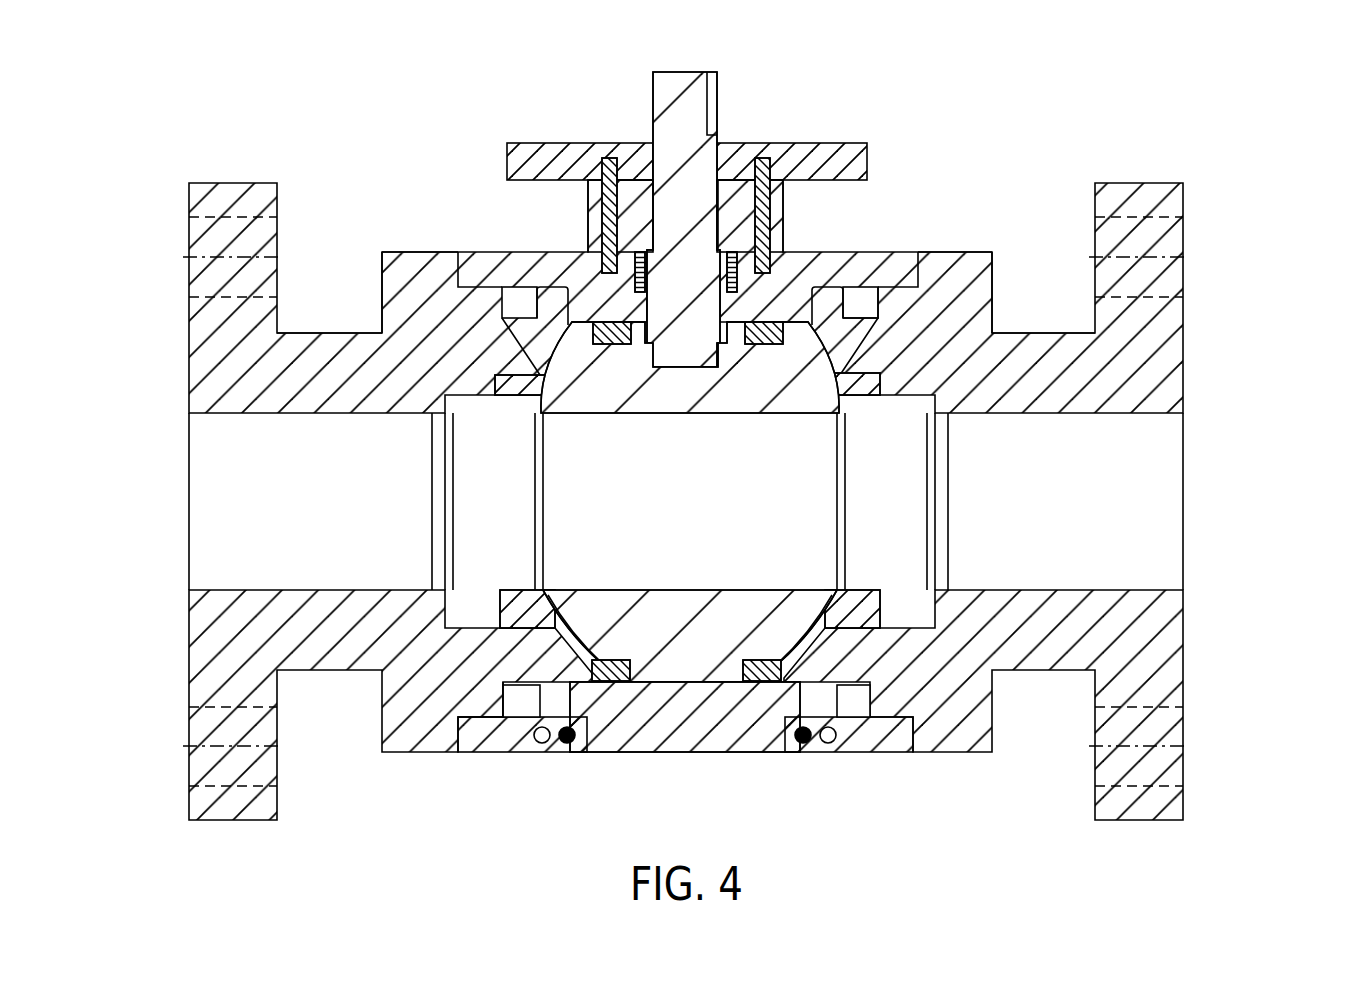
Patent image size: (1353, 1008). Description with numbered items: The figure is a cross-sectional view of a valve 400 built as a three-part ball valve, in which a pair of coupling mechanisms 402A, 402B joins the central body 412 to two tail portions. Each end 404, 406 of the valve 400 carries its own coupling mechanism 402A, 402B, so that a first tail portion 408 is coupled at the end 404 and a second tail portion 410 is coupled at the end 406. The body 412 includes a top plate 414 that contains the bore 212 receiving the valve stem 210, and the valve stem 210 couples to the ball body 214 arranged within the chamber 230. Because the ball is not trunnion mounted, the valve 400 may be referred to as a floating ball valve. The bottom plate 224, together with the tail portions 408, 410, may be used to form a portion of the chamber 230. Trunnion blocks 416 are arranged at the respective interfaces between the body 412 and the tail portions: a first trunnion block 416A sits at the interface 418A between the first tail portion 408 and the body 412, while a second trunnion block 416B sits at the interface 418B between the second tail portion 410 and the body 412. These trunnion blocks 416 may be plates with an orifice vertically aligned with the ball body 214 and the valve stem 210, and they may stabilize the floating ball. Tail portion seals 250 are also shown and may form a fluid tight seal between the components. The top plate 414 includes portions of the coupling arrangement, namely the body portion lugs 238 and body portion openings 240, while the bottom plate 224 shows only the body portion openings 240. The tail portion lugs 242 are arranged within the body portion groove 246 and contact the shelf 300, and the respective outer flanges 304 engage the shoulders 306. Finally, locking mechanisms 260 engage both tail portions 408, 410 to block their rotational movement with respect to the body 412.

The valve 400 is at (1240, 112).
The coupling mechanism 402A is at (445, 195).
The coupling mechanism 402B is at (985, 118).
The end 404 is at (330, 830).
The end 406 is at (1190, 855).
The first tail portion 408 is at (220, 345).
The second tail portion 410 is at (1150, 345).
The body 412 is at (785, 112).
The top plate 414 is at (850, 305).
The trunnion blocks 416 is at (600, 345).
The first trunnion block 416A is at (610, 655).
The second trunnion block 416B is at (755, 655).
The interface 418A is at (460, 322).
The interface 418B is at (965, 255).
The valve stem 210 is at (688, 105).
The bore 212 is at (640, 240).
The ball body 214 is at (820, 370).
The bottom plate 224 is at (700, 735).
The chamber 230 is at (510, 700).
The body portion lugs 238 is at (850, 290).
The body portion openings 240 is at (520, 700).
The tail portion lugs 242 is at (850, 318).
The body portion groove 246 is at (552, 285).
The tail portion seals 250 is at (600, 370).
The locking mechanisms 260 is at (527, 760).
The shelf 300 is at (820, 330).
The outer flanges 304 is at (440, 270).
The shoulders 306 is at (458, 300).